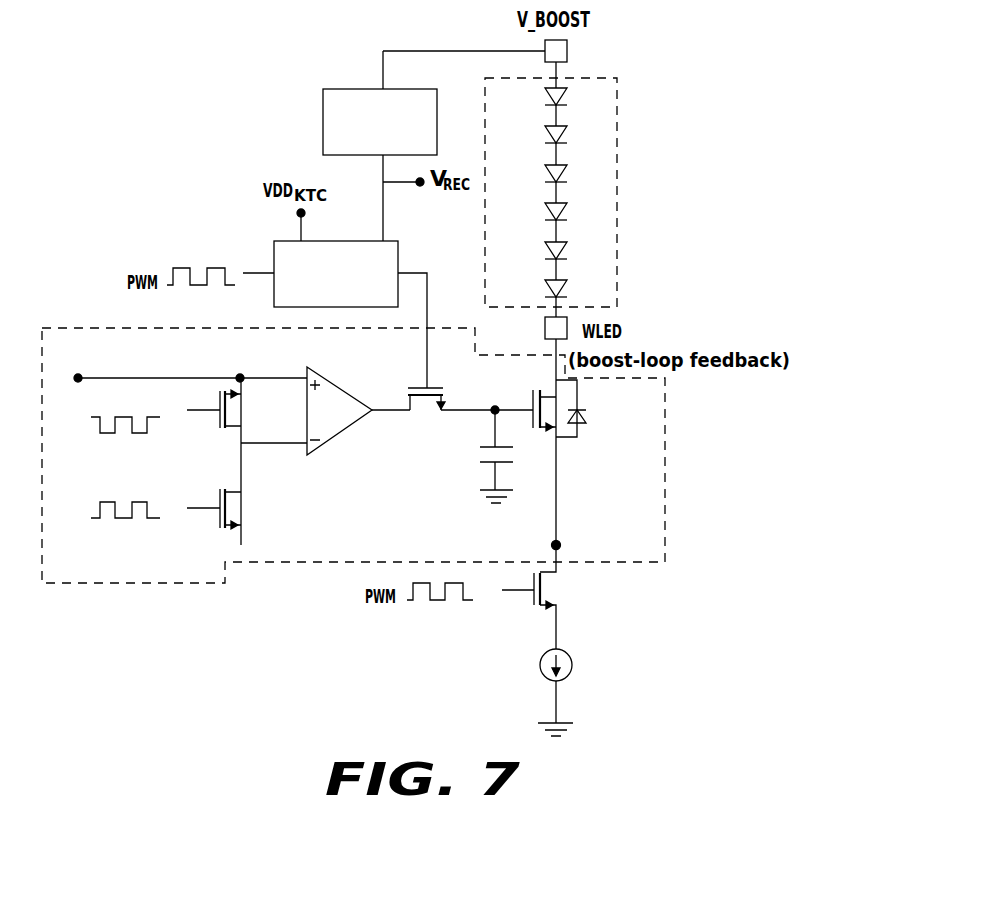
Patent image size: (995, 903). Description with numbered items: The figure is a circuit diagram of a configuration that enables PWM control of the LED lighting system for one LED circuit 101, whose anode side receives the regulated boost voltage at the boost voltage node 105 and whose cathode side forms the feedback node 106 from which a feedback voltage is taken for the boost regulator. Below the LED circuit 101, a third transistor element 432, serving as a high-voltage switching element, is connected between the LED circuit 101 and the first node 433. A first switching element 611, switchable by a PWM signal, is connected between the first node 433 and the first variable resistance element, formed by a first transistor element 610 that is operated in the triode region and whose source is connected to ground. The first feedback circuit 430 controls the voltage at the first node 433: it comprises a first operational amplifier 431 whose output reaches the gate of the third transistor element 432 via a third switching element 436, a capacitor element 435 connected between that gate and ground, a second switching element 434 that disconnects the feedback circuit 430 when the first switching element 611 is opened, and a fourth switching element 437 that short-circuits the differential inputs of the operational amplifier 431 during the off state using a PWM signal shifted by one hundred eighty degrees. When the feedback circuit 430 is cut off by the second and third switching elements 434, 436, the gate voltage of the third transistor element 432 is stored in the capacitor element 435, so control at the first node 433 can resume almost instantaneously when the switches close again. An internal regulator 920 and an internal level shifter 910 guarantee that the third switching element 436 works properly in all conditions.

The boost voltage node 105 is at (567, 51).
The LED string 101 is at (617, 113).
The internal regulator 920 is at (323, 100).
The internal level shifter 910 is at (274, 251).
The feedback node 106 is at (545, 329).
The first feedback circuit 430 is at (118, 585).
The first operational amplifier 431 is at (330, 381).
The third switching element 436 is at (437, 386).
The fourth switching element 437 is at (213, 422).
The second switching element 434 is at (213, 520).
The capacitor element 435 is at (458, 478).
The third transistor element 432 is at (577, 437).
The first node 433 is at (560, 543).
The first switching element 611 is at (528, 610).
The first transistor element 610 is at (538, 674).